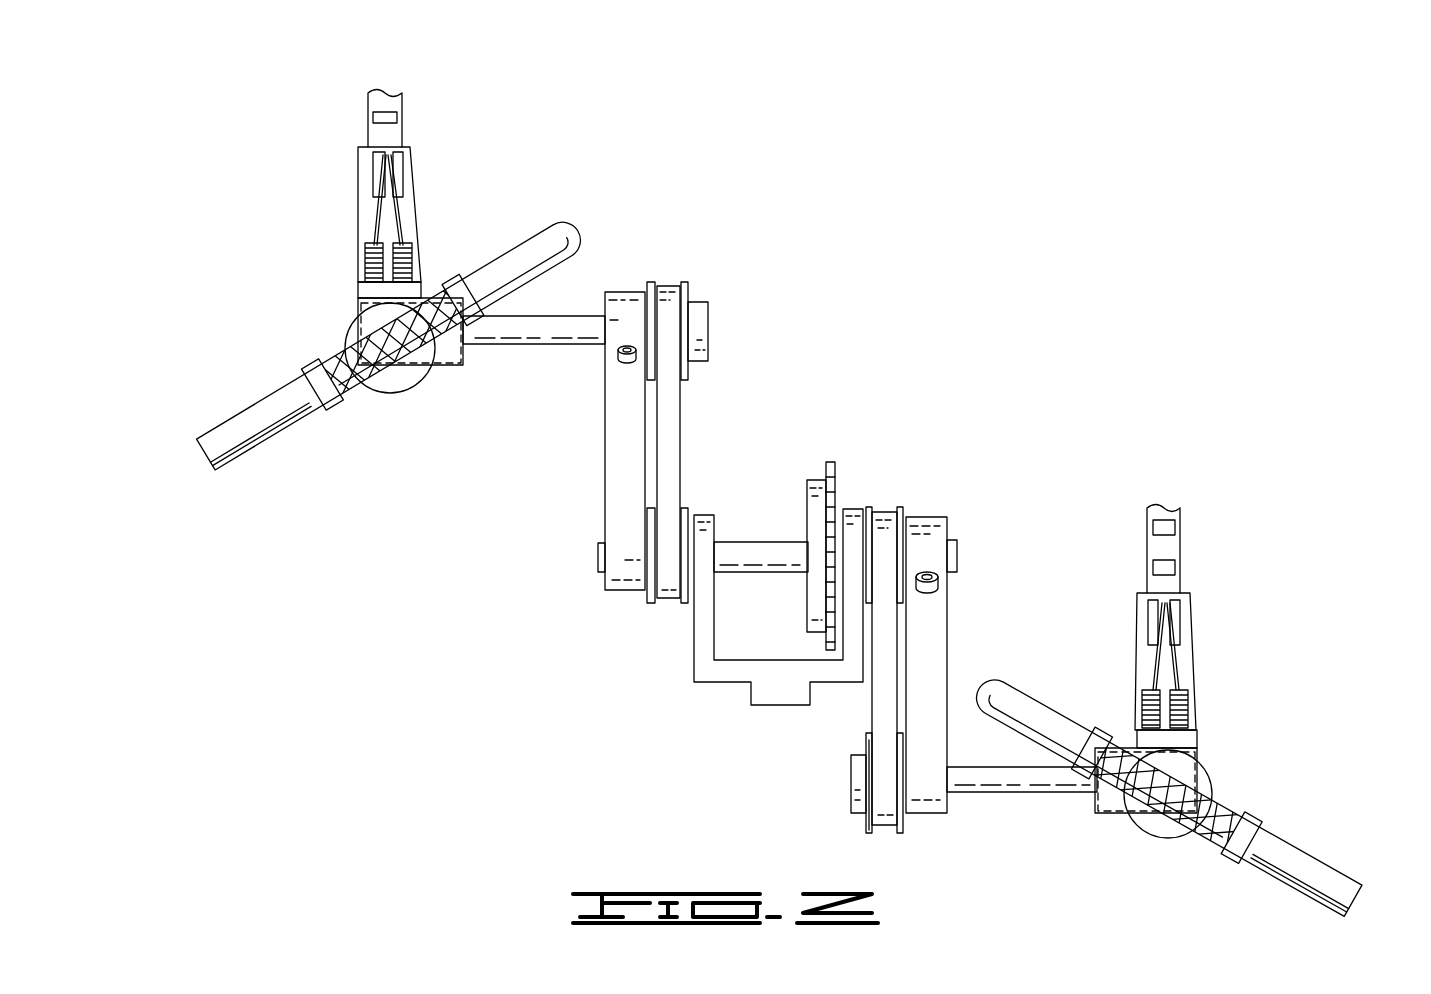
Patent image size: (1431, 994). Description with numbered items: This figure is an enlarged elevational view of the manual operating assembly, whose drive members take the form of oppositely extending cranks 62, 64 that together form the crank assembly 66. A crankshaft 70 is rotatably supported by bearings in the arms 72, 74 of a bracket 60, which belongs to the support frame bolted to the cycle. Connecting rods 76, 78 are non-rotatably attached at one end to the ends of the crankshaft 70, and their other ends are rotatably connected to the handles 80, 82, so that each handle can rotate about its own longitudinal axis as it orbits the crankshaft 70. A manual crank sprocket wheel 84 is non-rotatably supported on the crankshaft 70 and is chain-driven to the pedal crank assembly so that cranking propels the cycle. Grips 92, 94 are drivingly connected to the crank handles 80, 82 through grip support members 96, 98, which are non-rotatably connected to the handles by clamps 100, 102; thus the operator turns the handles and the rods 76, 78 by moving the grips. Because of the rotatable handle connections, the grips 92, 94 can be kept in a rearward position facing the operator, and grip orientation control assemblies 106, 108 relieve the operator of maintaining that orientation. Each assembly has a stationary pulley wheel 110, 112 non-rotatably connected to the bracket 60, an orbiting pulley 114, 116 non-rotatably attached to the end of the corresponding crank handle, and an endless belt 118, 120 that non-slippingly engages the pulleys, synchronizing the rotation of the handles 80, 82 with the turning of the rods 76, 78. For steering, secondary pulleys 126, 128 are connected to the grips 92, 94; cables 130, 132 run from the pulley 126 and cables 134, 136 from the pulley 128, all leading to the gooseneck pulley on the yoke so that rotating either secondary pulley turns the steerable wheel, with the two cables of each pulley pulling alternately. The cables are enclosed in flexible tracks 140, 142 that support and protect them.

The bracket 60 is at (707, 683).
The crank 62 is at (578, 308).
The crank 64 is at (1010, 808).
The crank assembly 66 is at (972, 401).
The crankshaft 70 is at (737, 542).
The arm 72 is at (700, 637).
The arm 74 is at (853, 510).
The connecting rod 76 is at (613, 422).
The connecting rod 78 is at (940, 607).
The handle 80 is at (550, 343).
The handle 82 is at (1037, 800).
The manual crank sprocket wheel 84 is at (829, 460).
The grip 92 is at (362, 388).
The grip 94 is at (1207, 835).
The grip support member 96 is at (253, 405).
The grip support member 98 is at (1302, 845).
The clamp 100 is at (371, 310).
The clamp 102 is at (1183, 763).
The grip orientation control assembly 106 is at (693, 406).
The grip orientation control assembly 108 is at (872, 709).
The pulley wheel 110 is at (683, 283).
The pulley wheel 112 is at (900, 508).
The orbiting pulley 114 is at (686, 483).
The orbiting pulley 116 is at (873, 825).
The belt 118 is at (667, 476).
The belt 120 is at (882, 771).
The secondary pulley 126 is at (367, 338).
The secondary pulley 128 is at (1203, 779).
The cable 130 is at (378, 220).
The cable 132 is at (395, 225).
The cable 134 is at (1155, 668).
The cable 136 is at (1177, 673).
The flexible track 140 is at (404, 114).
The flexible track 142 is at (1180, 540).